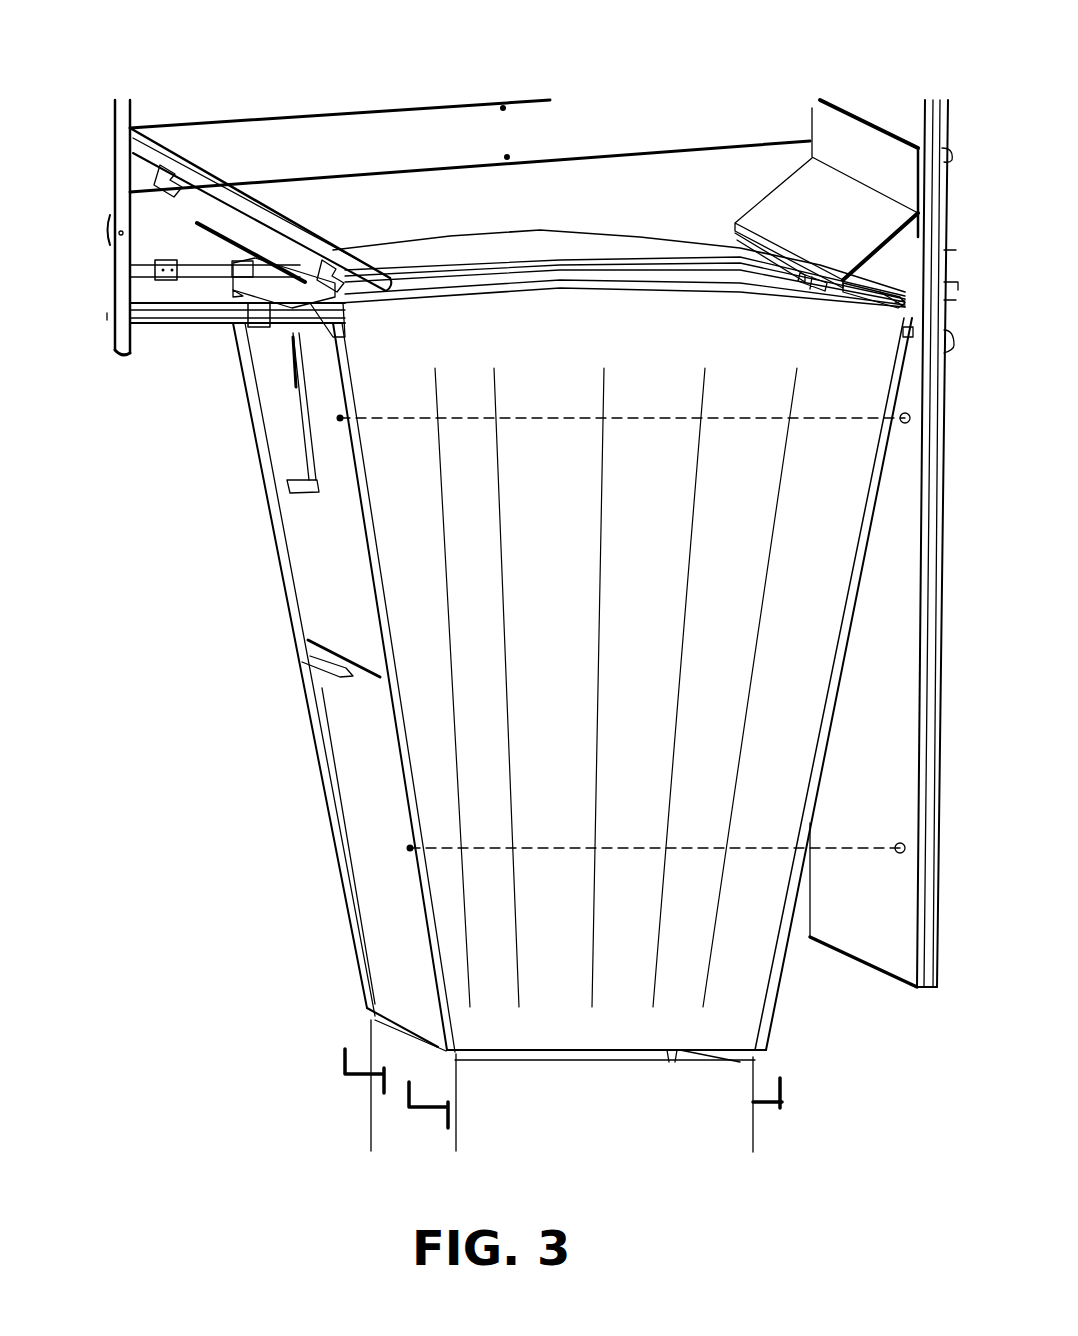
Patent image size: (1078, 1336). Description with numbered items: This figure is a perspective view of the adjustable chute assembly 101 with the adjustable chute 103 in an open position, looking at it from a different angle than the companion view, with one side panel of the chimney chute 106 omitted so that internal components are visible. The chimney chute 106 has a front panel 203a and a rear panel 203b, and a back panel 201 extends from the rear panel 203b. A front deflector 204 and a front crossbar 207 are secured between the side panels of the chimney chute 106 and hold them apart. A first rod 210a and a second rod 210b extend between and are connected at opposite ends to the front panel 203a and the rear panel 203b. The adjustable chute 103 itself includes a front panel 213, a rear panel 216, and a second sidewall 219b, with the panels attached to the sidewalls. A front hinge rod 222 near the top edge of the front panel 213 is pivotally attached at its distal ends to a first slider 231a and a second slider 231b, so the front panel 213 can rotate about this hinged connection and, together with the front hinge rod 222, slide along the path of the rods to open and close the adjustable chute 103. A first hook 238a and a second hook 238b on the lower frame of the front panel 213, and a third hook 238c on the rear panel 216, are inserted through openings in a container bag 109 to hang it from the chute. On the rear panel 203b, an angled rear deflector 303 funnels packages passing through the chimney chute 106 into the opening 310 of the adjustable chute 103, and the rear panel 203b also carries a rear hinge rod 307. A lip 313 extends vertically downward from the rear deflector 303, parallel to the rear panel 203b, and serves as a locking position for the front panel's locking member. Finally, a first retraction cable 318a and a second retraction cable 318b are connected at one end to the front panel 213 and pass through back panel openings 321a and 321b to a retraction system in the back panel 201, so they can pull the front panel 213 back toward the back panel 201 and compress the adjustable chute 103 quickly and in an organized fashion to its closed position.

The adjustable chute assembly 101 is at (643, 42).
The adjustable chute 103 is at (240, 712).
The chimney chute 106 is at (93, 122).
The container bag 109 is at (369, 1108).
The back panel 201 is at (873, 950).
The front panel 203a is at (100, 337).
The rear panel 203b is at (937, 115).
The front deflector 204 is at (312, 232).
The front crossbar 207 is at (230, 223).
The first rod 210a is at (148, 264).
The second rod 210b is at (178, 322).
The front panel 213 is at (322, 793).
The rear panel 216 is at (838, 712).
The second sidewall 219b is at (831, 597).
The front hinge rod 222 is at (292, 293).
The first slider 231a is at (147, 277).
The second slider 231b is at (257, 318).
The first hook 238a is at (342, 1060).
The second hook 238b is at (408, 1110).
The third hook 238c is at (786, 1106).
The rear deflector 303 is at (770, 207).
The rear hinge rod 307 is at (890, 296).
The opening 310 is at (458, 283).
The lip 313 is at (738, 228).
The first retraction cable 318a is at (537, 418).
The second retraction cable 318b is at (625, 846).
The back panel opening 321a is at (893, 405).
The back panel opening 321b is at (890, 858).